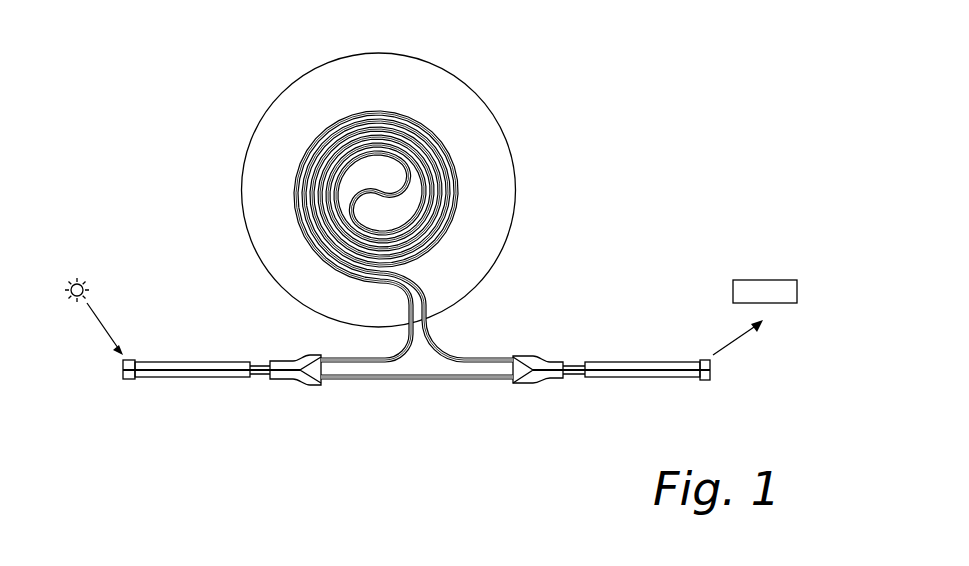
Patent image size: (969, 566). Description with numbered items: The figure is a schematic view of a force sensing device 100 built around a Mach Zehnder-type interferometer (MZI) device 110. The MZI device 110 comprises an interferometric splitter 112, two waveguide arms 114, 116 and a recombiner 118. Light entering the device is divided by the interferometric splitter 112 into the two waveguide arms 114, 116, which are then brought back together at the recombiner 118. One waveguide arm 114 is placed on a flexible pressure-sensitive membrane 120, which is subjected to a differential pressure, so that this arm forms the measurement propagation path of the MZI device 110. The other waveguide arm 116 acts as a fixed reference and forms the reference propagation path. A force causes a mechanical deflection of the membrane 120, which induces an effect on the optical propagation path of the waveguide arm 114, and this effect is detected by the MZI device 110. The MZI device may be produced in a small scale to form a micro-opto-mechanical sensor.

The force sensing device 100 is at (704, 70).
The Mach Zehnder-type interferometer device 110 is at (161, 158).
The interferometric splitter 112 is at (287, 379).
The waveguide arm 114 is at (447, 347).
The waveguide arm 116 is at (407, 381).
The recombiner 118 is at (545, 376).
The flexible pressure-sensitive membrane 120 is at (470, 118).